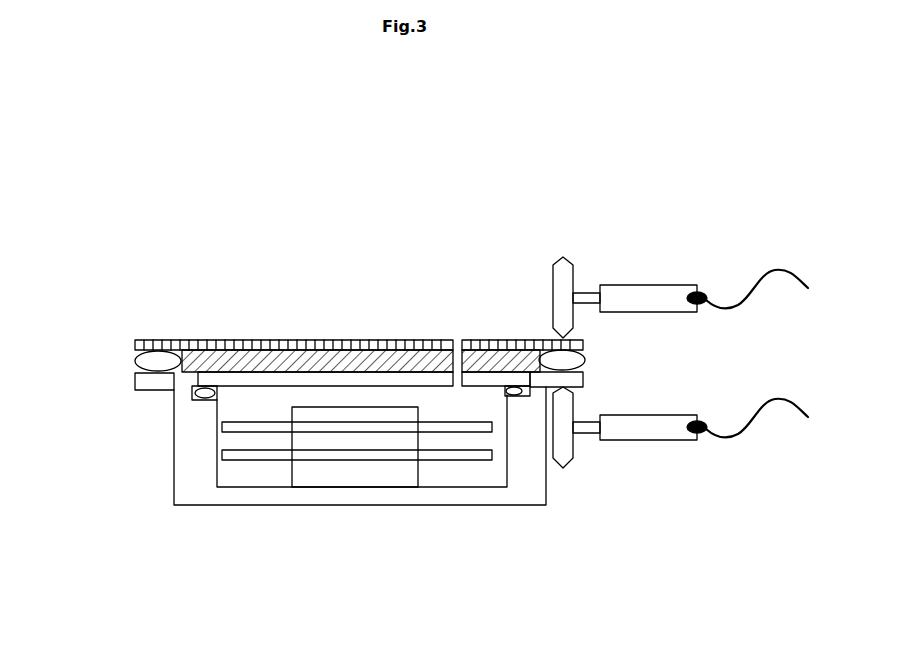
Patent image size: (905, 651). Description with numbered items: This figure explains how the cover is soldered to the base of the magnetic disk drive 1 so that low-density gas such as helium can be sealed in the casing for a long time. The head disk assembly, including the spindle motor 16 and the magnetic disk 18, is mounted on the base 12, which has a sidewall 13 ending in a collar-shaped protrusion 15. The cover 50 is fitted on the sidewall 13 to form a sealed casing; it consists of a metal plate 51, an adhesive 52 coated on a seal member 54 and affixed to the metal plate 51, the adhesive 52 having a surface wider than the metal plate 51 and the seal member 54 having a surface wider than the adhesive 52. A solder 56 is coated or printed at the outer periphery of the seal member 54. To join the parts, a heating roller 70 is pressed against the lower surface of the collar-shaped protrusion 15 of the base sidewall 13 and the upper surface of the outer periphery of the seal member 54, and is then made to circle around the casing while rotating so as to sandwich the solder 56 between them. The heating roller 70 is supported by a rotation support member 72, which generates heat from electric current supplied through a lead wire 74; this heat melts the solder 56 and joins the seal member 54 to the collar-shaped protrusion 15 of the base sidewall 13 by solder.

The magnetic disk drive 1 is at (82, 208).
The base 12 is at (237, 495).
The sidewall 13 is at (173, 447).
The collar-shaped protrusion 15 is at (152, 383).
The spindle motor 16 is at (321, 485).
The magnetic disk 18 is at (458, 457).
The cover 50 is at (308, 328).
The metal plate 51 is at (412, 378).
The adhesive 52 is at (252, 366).
The seal member 54 is at (392, 340).
The solder 56 is at (145, 362).
The heating roller 70 is at (568, 256).
The rotation support member 72 is at (638, 298).
The lead wire 74 is at (777, 270).